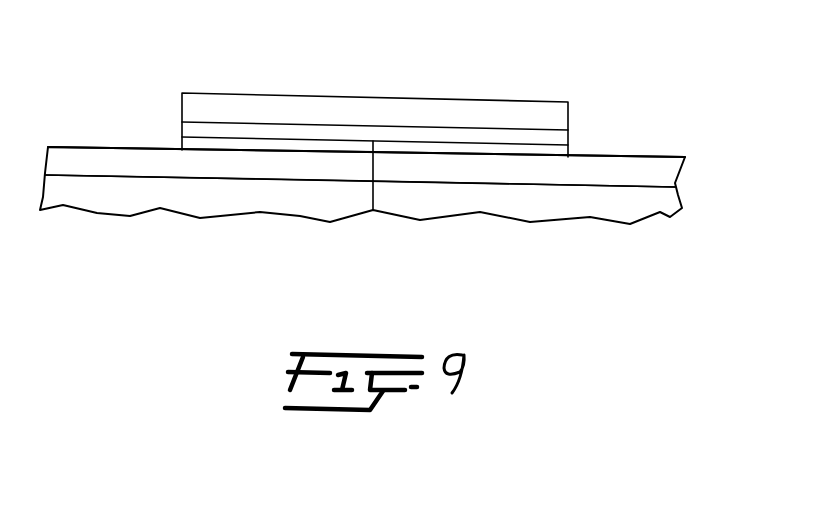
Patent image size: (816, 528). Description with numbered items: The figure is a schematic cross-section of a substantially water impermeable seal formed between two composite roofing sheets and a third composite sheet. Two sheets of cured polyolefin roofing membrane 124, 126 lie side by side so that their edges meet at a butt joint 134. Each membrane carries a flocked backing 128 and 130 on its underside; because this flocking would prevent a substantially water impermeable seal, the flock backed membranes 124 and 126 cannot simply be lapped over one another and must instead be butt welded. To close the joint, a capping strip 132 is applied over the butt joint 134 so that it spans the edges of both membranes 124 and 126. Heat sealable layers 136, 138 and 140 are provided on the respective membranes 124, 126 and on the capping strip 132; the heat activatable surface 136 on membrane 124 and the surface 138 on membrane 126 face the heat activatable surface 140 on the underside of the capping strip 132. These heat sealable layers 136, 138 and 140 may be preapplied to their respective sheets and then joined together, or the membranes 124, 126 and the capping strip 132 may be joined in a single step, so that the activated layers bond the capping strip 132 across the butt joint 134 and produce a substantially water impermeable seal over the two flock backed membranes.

The cured polyolefin roofing membrane 124 is at (642, 165).
The cured polyolefin roofing membrane 126 is at (83, 157).
The flocked backing 128 is at (563, 203).
The flocked backing 130 is at (222, 202).
The capping strip 132 is at (460, 107).
The butt joint 134 is at (372, 172).
The heat sealable layer 136 is at (500, 150).
The heat sealable layer 138 is at (187, 146).
The heat sealable layer 140 is at (558, 133).